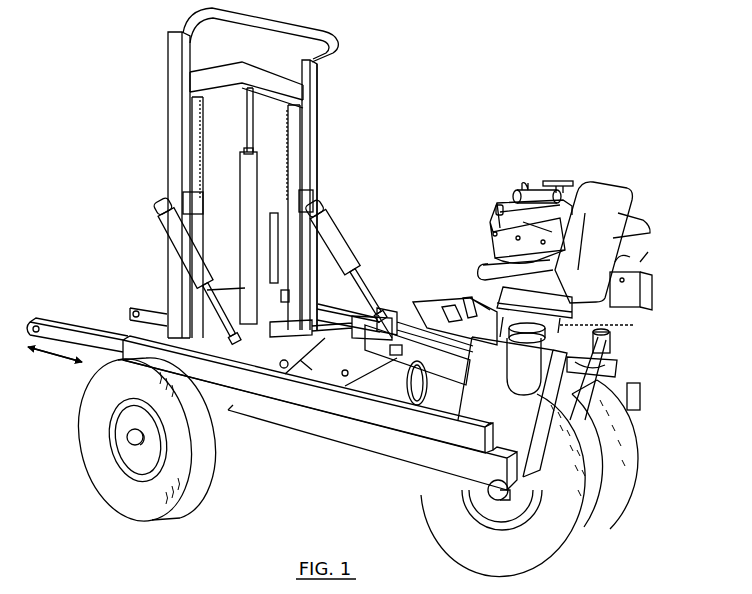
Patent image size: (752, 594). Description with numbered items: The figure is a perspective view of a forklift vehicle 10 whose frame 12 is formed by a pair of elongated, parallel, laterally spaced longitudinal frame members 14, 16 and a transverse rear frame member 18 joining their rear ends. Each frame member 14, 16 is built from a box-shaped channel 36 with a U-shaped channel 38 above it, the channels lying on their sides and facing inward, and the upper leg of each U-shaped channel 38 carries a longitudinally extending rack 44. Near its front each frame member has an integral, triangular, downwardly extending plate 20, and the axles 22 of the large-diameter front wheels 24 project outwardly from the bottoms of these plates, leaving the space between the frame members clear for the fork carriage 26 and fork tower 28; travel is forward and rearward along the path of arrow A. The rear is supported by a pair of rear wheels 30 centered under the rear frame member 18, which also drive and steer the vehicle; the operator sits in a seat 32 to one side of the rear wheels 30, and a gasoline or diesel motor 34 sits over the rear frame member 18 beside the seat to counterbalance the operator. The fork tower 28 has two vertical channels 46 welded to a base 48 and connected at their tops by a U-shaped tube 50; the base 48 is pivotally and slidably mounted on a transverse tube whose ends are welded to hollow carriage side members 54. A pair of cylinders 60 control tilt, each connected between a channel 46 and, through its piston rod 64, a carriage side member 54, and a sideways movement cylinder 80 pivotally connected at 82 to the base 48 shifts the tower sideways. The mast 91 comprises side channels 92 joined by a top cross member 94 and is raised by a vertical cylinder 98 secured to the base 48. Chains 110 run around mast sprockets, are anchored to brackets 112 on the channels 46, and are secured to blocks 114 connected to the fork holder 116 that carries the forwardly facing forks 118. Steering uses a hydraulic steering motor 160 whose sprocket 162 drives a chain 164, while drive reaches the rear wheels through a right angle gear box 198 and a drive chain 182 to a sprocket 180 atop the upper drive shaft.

The forklift vehicle 10 is at (421, 184).
The frame 12 is at (320, 413).
The longitudinal frame member 14 is at (300, 425).
The longitudinal frame member 16 is at (450, 370).
The transverse rear frame member 18 is at (537, 440).
The triangular plate 20 is at (228, 412).
The axle 22 is at (141, 447).
The front wheel 24 is at (121, 500).
The fork carriage 26 is at (338, 305).
The fork tower 28 is at (320, 104).
The rear wheel 30 is at (613, 528).
The seat 32 is at (612, 180).
The motor 34 is at (491, 233).
The box-shaped channel 36 is at (405, 456).
The U-shaped channel 38 is at (475, 420).
The rack 44 is at (396, 352).
The channel 46 is at (168, 93).
The base 48 is at (305, 356).
The U-shaped tube 50 is at (318, 25).
The carriage side member 54 is at (138, 316).
The cylinder 60 is at (176, 256).
The piston rod 64 is at (222, 294).
The sideways movement cylinder 80 is at (276, 352).
The pivotal connection 82 is at (278, 326).
The mast 91 is at (218, 66).
The side channel 92 is at (192, 120).
The top cross member 94 is at (270, 72).
The cylinder 98 is at (257, 176).
The chain 110 is at (203, 150).
The bracket 112 is at (183, 200).
The block 114 is at (281, 300).
The fork holder 116 is at (226, 282).
The forks 118 is at (92, 325).
The hydraulic steering motor 160 is at (625, 350).
The sprocket 162 is at (628, 393).
The chain 164 is at (620, 370).
The sprocket 180 is at (575, 315).
The drive chain 182 is at (640, 325).
The right angle gear box 198 is at (648, 295).
The arrow A is at (55, 362).